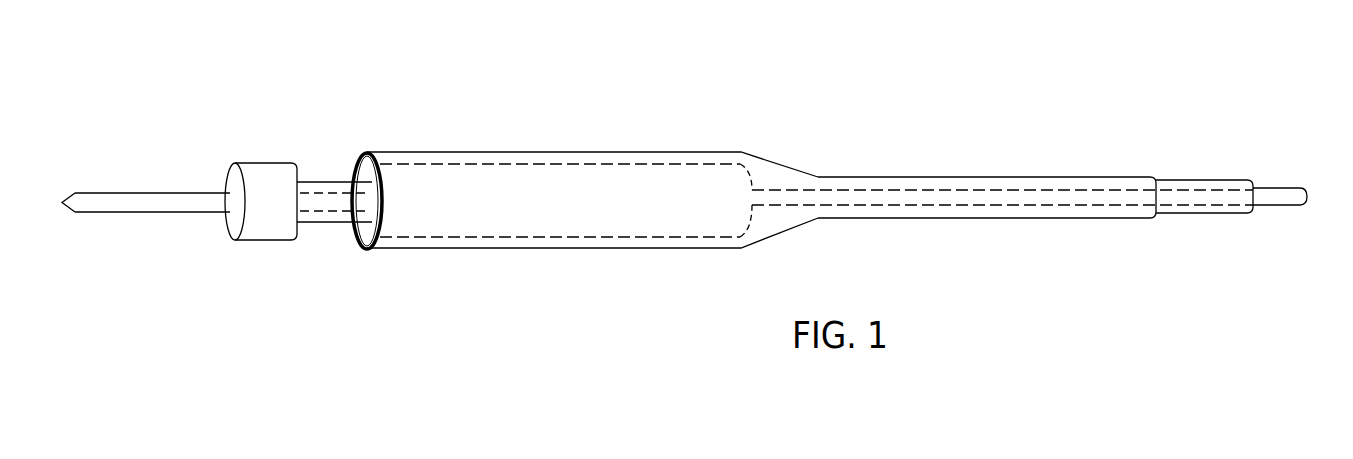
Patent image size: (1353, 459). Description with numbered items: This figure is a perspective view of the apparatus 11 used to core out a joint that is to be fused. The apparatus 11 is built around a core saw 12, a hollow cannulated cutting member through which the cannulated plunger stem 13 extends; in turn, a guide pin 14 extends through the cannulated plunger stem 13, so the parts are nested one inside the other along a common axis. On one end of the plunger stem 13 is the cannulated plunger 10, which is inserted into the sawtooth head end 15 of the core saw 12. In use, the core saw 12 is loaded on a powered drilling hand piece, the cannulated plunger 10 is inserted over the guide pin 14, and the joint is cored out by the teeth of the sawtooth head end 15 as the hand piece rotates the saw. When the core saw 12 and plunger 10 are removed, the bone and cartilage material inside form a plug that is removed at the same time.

The cannulated plunger 10 is at (270, 231).
The apparatus 11 is at (728, 97).
The core saw 12 is at (617, 180).
The cannulated plunger stem 13 is at (1192, 179).
The guide pin 14 is at (153, 194).
The sawtooth head end 15 is at (365, 152).